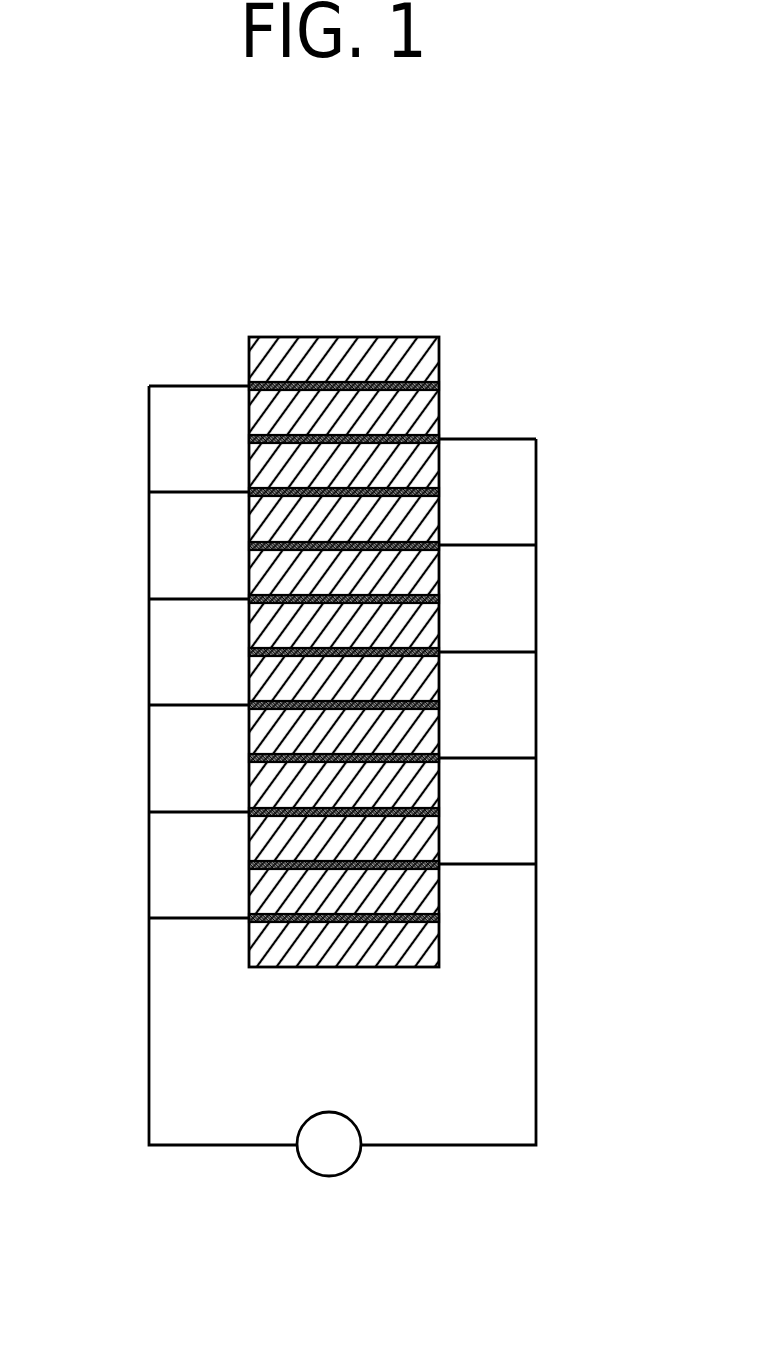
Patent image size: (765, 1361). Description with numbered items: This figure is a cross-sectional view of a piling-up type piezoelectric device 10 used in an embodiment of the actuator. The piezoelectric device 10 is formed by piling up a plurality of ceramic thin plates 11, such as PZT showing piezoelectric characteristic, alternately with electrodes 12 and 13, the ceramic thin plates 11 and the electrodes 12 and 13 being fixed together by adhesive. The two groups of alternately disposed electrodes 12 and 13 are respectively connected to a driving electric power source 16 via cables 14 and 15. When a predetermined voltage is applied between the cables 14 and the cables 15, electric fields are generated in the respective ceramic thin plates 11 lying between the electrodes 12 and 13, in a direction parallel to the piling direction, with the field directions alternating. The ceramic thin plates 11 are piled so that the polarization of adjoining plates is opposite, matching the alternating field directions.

The piezoelectric device 10 is at (429, 574).
The ceramic thin plate 11 is at (439, 420).
The electrode 12 is at (439, 385).
The electrode 13 is at (249, 441).
The cable 14 is at (148, 1032).
The cable 15 is at (537, 1040).
The driving electric power source 16 is at (326, 1171).